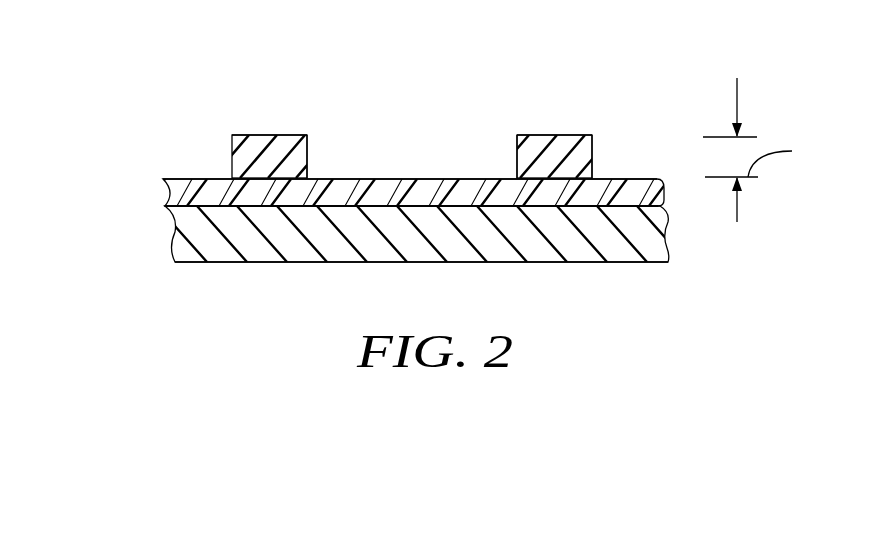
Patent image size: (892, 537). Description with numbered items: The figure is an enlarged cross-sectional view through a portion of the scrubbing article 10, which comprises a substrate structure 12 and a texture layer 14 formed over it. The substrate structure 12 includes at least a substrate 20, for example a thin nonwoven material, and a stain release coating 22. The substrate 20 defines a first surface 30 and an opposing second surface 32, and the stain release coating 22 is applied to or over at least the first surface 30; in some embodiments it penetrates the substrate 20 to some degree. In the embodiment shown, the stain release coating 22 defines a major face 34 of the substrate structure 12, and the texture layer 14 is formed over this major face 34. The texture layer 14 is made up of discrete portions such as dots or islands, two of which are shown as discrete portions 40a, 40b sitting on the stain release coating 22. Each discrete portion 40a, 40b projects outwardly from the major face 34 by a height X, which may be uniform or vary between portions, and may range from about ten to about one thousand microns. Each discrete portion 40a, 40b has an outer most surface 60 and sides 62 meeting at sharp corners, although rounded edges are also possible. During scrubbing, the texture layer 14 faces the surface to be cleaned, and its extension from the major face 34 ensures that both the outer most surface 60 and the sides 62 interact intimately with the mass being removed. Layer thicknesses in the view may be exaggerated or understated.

The scrubbing article 10 is at (124, 97).
The substrate structure 12 is at (146, 215).
The texture layer 14 is at (484, 78).
The substrate 20 is at (623, 254).
The stain release coating 22 is at (658, 196).
The first surface 30 is at (540, 207).
The second surface 32 is at (237, 263).
The major face 34 is at (183, 178).
The discrete portion 40a is at (253, 132).
The discrete portion 40b is at (537, 132).
The outer most surface 60 is at (283, 134).
The sides 62 is at (307, 148).